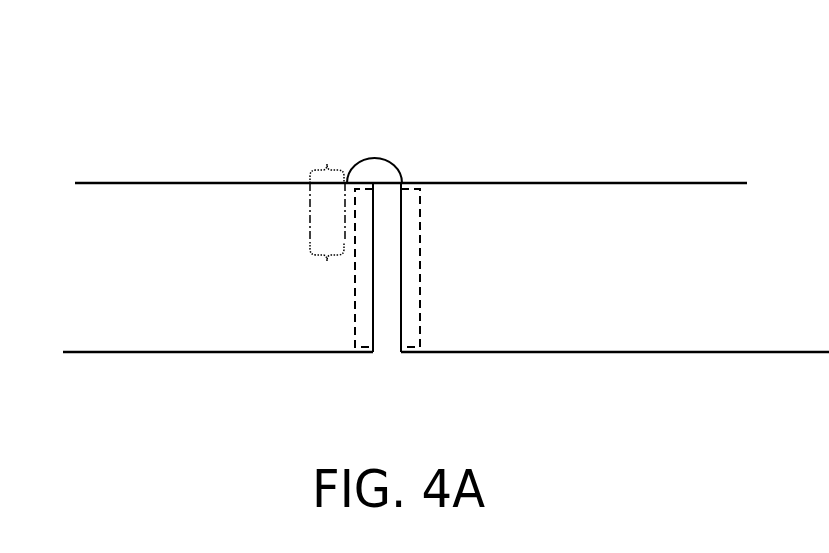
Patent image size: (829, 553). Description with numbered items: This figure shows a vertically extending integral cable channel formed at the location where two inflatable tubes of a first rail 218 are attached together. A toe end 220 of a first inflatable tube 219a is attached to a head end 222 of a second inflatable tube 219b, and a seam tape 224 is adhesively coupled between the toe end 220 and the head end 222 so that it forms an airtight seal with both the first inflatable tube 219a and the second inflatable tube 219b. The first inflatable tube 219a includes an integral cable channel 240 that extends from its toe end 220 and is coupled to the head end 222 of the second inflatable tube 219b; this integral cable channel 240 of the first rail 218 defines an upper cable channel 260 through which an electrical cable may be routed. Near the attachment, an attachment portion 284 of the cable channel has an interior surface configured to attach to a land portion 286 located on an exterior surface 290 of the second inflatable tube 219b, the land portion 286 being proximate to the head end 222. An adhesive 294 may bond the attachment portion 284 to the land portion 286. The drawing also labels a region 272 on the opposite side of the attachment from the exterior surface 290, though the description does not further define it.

The first rail 218 is at (107, 106).
The first inflatable tube 219a is at (553, 208).
The second inflatable tube 219b is at (242, 200).
The toe end 220 is at (402, 300).
The head end 222 is at (375, 330).
The seam tape 224 is at (388, 242).
The integral cable channel 240 is at (374, 158).
The upper cable channel 260 is at (398, 170).
The second layer 272 is at (677, 295).
The attachment portion 284 is at (326, 160).
The land portion 286 is at (326, 267).
The exterior surface 290 is at (157, 297).
The adhesive 294 is at (326, 183).